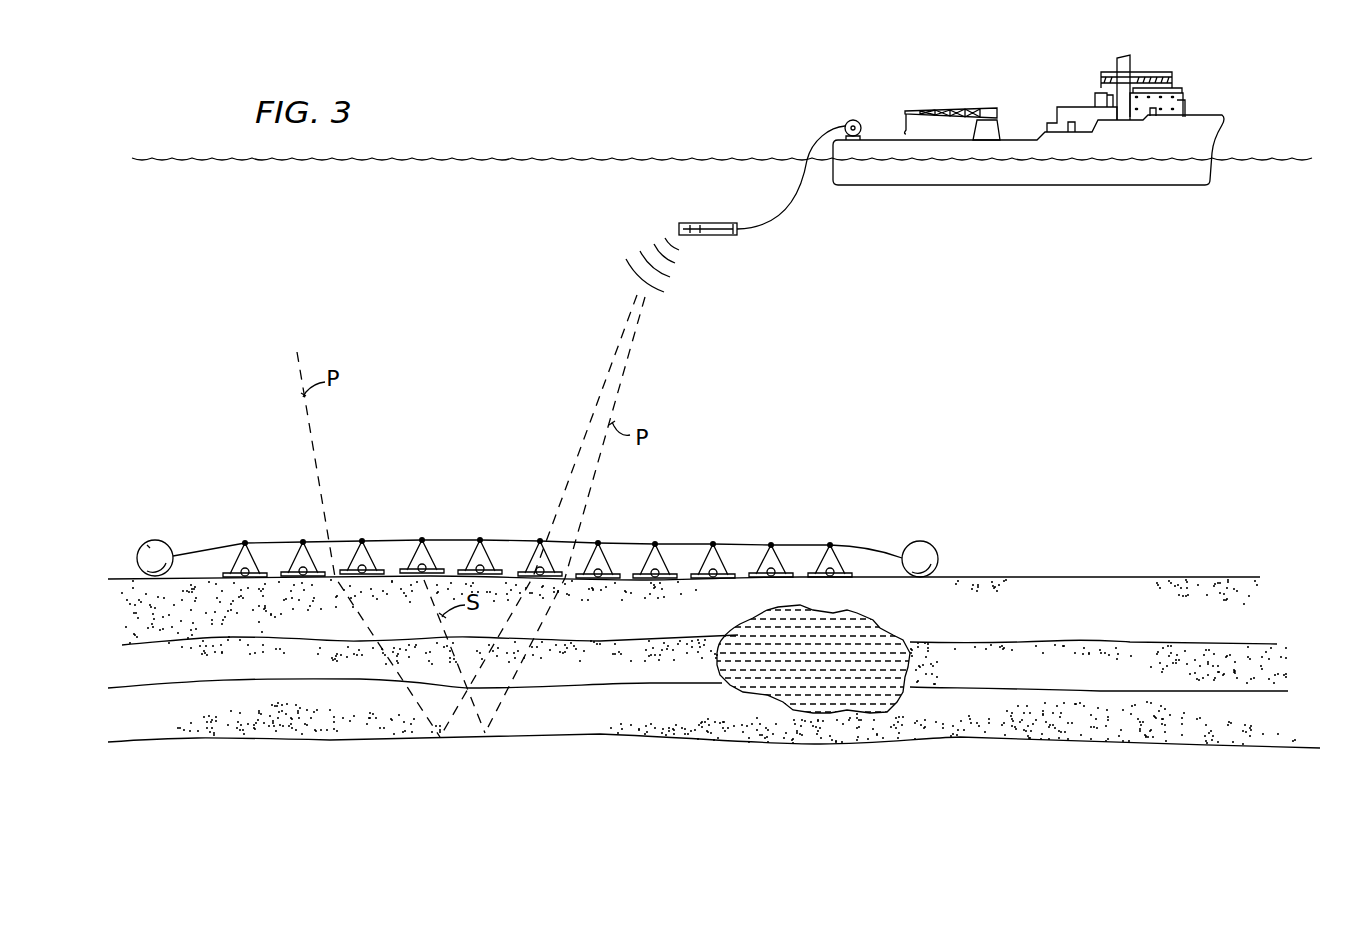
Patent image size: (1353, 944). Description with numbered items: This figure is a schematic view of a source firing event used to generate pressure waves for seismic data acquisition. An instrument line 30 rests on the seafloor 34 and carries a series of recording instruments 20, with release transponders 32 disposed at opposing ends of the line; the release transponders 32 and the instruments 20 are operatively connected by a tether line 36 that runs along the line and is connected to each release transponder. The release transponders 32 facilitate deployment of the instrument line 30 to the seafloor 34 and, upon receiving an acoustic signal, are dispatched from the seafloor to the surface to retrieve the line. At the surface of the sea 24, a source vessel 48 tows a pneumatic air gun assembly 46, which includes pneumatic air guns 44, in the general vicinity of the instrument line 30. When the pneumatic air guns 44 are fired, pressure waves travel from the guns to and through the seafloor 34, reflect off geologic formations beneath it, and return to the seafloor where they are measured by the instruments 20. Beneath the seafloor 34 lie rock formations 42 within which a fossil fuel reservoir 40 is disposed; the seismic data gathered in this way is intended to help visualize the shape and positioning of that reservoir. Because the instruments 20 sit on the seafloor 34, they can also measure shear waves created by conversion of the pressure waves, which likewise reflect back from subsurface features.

The recording instruments 20 is at (288, 562).
The sea 24 is at (987, 359).
The instrument line 30 is at (519, 524).
The release transponders 32 is at (933, 542).
The seafloor 34 is at (1103, 576).
The tether line 36 is at (452, 539).
The fossil fuel reservoir 40 is at (801, 669).
The rock formations 42 is at (386, 619).
The pneumatic air guns 44 is at (685, 229).
The pneumatic air gun assembly 46 is at (722, 236).
The source vessel 48 is at (1226, 130).